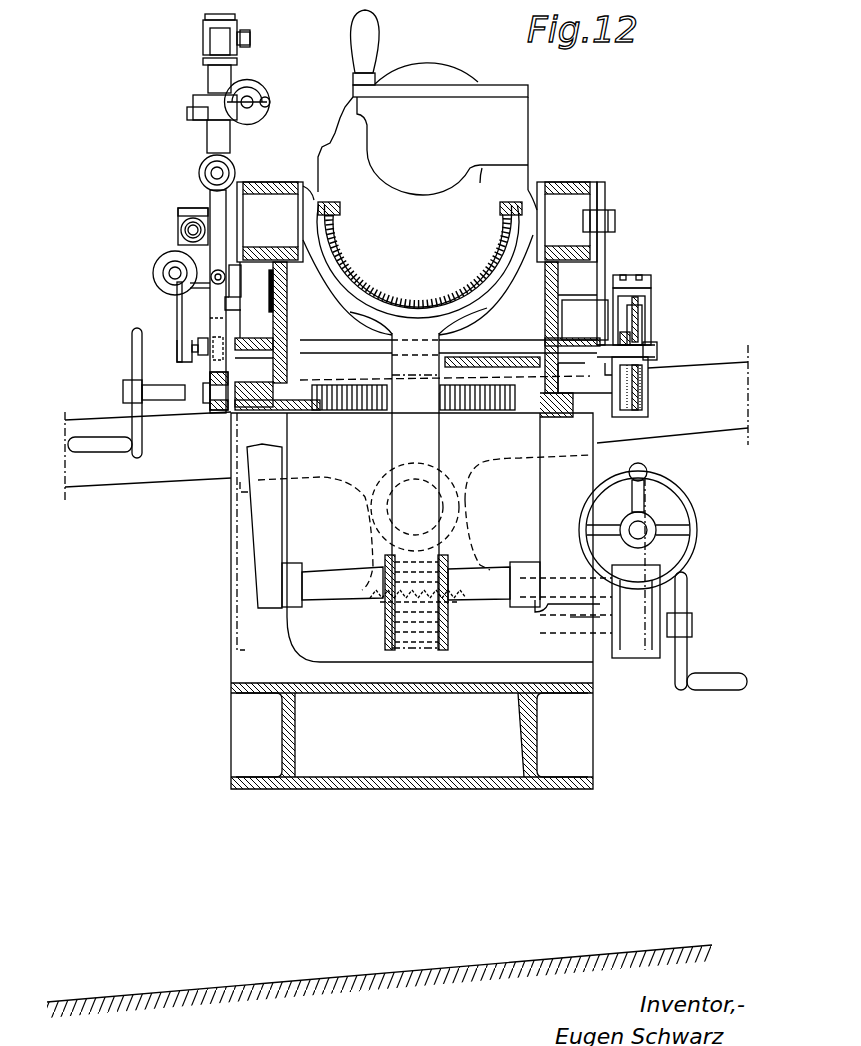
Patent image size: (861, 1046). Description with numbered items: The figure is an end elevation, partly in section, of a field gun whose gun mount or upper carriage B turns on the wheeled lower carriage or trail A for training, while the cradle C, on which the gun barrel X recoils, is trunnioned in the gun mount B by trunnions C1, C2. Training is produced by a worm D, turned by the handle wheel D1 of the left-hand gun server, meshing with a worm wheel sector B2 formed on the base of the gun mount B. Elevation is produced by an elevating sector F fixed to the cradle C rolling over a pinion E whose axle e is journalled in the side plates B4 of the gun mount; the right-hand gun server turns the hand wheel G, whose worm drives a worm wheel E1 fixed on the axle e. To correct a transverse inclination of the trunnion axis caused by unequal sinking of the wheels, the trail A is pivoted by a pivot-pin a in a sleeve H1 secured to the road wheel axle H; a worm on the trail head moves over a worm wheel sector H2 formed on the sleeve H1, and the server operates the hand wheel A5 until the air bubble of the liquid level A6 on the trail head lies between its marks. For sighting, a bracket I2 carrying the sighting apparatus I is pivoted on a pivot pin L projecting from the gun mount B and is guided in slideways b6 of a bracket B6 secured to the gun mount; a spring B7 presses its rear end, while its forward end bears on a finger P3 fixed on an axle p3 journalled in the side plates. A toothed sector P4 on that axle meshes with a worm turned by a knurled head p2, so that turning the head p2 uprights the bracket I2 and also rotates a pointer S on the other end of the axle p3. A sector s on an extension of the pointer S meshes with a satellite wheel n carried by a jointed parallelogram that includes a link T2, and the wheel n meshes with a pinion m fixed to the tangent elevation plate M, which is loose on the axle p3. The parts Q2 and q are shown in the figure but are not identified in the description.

The lower carriage A is at (242, 615).
The hand wheel A5 is at (682, 655).
The liquid level A6 is at (652, 280).
The gun mount B is at (287, 367).
The worm wheel sector B2 is at (463, 400).
The side plates B4 is at (262, 548).
The bracket B6 is at (288, 302).
The slideways b6 is at (275, 295).
The spring B7 is at (210, 280).
The cradle C is at (490, 276).
The trunnion C1 is at (273, 200).
The trunnion C2 is at (568, 203).
The worm D is at (402, 423).
The handle wheel D1 is at (138, 362).
The pinion E is at (382, 598).
The worm wheel E1 is at (645, 645).
The axle e is at (343, 577).
The elevating sector F is at (393, 530).
The hand wheel G is at (695, 515).
The road wheel axle H is at (183, 463).
The sleeve H1 is at (322, 477).
The worm wheel sector H2 is at (468, 568).
The sighting apparatus I is at (204, 94).
The bracket I2 is at (224, 300).
The pivot pin L is at (215, 412).
The tangent elevation plate M is at (641, 320).
The pinion m is at (634, 345).
The satellite wheel n is at (636, 397).
The finger P3 is at (205, 327).
The toothed sector P4 is at (177, 318).
The knurled head p2 is at (160, 273).
The axle p3 is at (532, 350).
The block Q2 is at (193, 215).
The pin q is at (183, 232).
The pointer S is at (650, 303).
The sector s is at (628, 418).
The link T2 is at (604, 260).
The gun barrel X is at (333, 145).
The pivot-pin a is at (450, 515).